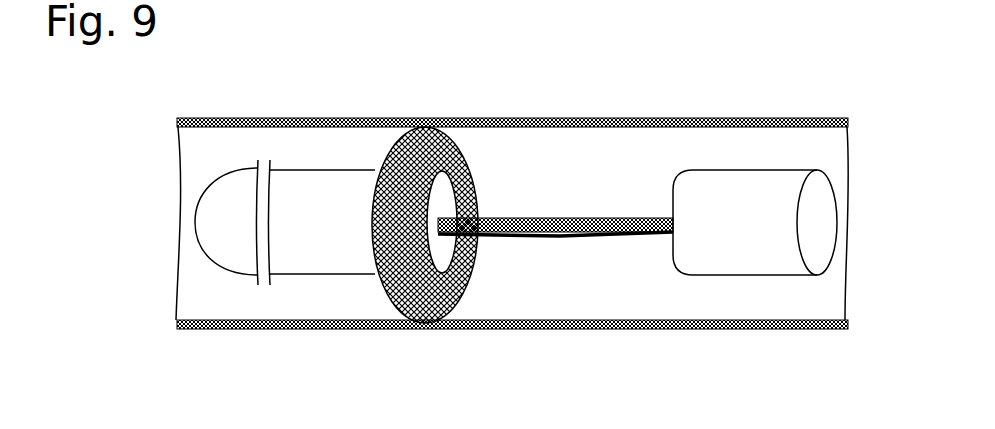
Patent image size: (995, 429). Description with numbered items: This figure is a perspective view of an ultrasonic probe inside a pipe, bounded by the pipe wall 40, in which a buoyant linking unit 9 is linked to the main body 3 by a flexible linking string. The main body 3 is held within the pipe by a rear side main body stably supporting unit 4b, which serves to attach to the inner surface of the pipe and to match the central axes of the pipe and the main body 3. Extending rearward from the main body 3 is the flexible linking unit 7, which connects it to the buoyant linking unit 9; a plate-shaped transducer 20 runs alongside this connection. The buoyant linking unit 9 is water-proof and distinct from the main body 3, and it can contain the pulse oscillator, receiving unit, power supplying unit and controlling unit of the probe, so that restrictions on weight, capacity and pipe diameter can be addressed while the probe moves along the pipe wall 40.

The pipe wall 40 is at (612, 125).
The main body 3 is at (325, 265).
The rear side main body stably supporting unit 4b is at (412, 140).
The flexible linking unit 7 is at (498, 213).
The plate-shaped transducer 20 is at (630, 240).
The buoyant linking unit 9 is at (737, 192).